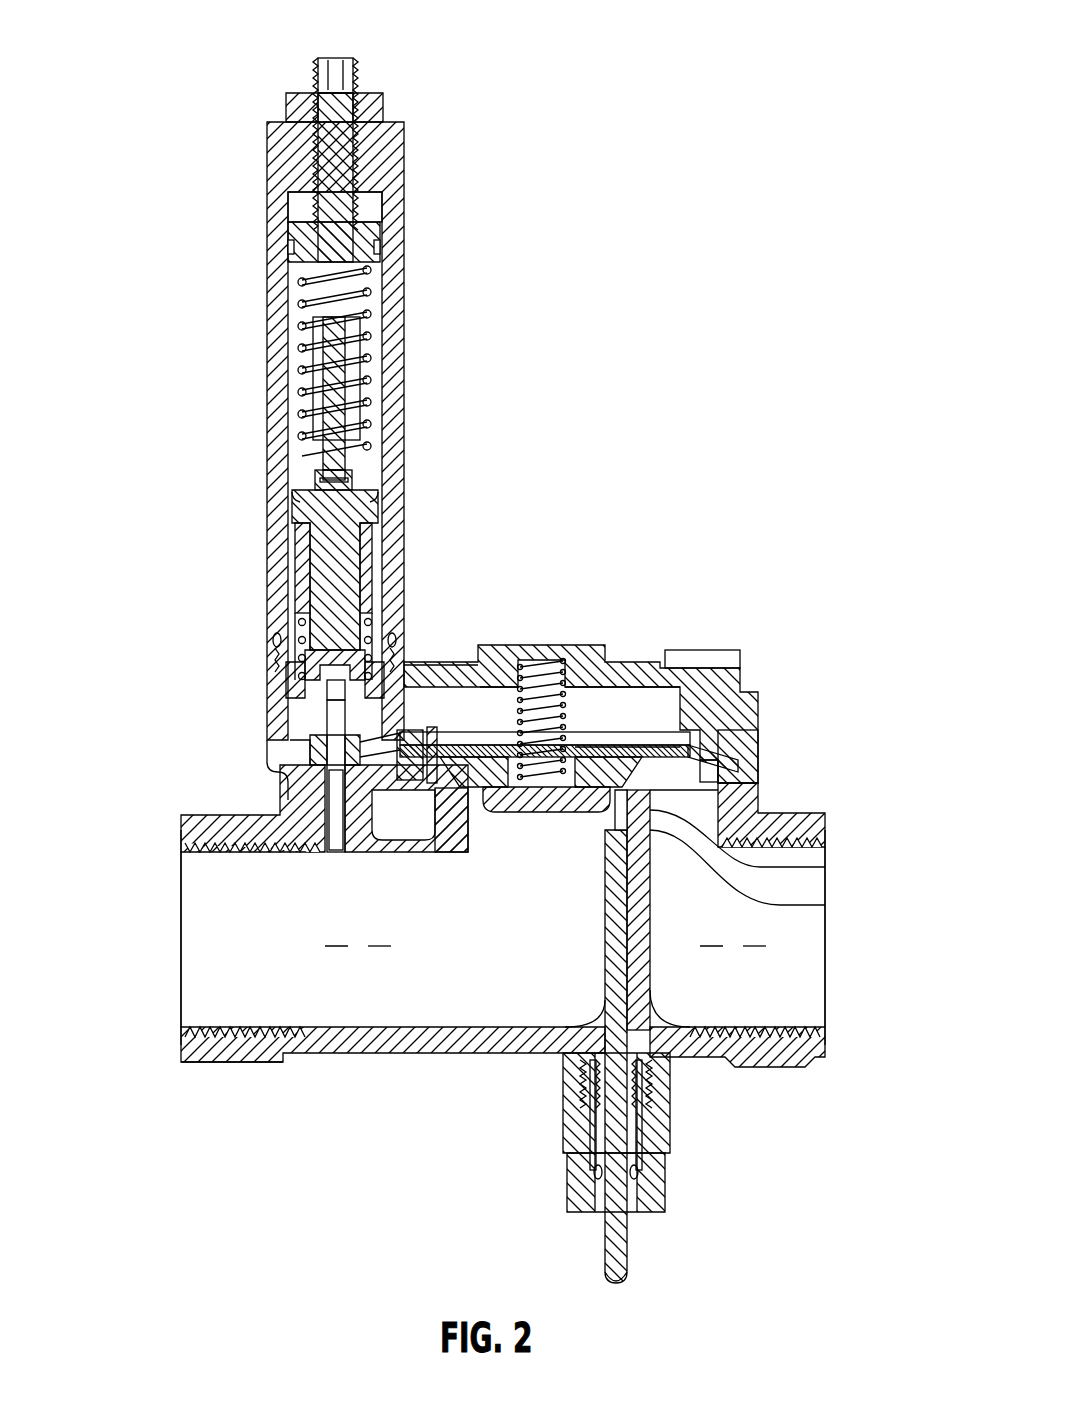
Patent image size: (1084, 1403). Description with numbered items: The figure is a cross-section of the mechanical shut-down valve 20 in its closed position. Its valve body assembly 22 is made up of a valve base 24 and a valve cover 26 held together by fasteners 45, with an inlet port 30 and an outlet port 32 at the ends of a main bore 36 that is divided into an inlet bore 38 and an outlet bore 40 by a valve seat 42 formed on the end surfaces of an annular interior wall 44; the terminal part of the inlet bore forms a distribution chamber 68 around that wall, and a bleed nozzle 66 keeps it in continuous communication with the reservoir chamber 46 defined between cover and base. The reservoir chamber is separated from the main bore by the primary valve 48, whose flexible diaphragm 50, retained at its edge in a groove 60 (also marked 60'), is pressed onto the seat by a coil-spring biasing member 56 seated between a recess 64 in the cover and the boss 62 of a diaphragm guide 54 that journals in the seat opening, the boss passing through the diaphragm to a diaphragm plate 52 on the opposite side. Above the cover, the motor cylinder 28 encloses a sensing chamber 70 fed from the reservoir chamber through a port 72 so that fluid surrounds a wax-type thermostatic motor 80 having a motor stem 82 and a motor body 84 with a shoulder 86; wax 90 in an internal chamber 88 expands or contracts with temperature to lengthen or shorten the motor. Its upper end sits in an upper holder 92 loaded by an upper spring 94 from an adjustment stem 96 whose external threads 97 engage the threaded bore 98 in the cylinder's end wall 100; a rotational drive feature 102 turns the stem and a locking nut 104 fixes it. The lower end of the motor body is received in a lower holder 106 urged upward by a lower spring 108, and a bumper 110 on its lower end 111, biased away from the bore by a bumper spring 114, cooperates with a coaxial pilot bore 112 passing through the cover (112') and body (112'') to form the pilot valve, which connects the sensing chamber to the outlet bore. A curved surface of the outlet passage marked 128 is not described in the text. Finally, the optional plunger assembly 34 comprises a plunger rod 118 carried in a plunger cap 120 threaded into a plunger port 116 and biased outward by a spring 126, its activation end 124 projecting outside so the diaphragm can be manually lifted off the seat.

The shut-down valve 20 is at (755, 205).
The valve body assembly 22 is at (199, 1080).
The valve base 24 is at (400, 1047).
The valve cover 26 is at (608, 650).
The motor cylinder 28 is at (292, 134).
The inlet port 30 is at (848, 932).
The outlet port 32 is at (158, 932).
The plunger assembly 34 is at (533, 1190).
The main bore 36 is at (530, 934).
The inlet bore 38 is at (754, 934).
The outlet bore 40 is at (379, 934).
The valve seat 42 is at (442, 756).
The annular interior wall 44 is at (458, 815).
The fasteners 45 is at (742, 668).
The reservoir chamber 46 is at (500, 700).
The primary valve 48 is at (712, 718).
The flexible diaphragm 50 is at (742, 777).
The diaphragm plate 52 is at (643, 768).
The diaphragm guide 54 is at (575, 800).
The biasing member 56 is at (542, 662).
The groove 60 is at (593, 691).
The diaphragm edge 60' is at (263, 770).
The boss 62 is at (630, 745).
The recess 64 is at (590, 682).
The bleed nozzle 66 is at (427, 740).
The distribution chamber 68 is at (412, 822).
The sensing chamber 70 is at (362, 480).
The port 72 is at (396, 662).
The thermostatic motor 80 is at (300, 466).
The motor stem 82 is at (338, 380).
The motor body 84 is at (322, 540).
The shoulder 86 is at (372, 520).
The chamber 88 is at (348, 472).
The wax 90 is at (352, 478).
The upper holder 92 is at (300, 330).
The upper spring 94 is at (358, 367).
The adjustment stem 96 is at (372, 224).
The external threads 97 is at (312, 173).
The bore 98 is at (357, 177).
The end wall 100 is at (270, 122).
The rotational drive feature 102 is at (326, 55).
The locking nut 104 is at (365, 100).
The lower holder 106 is at (302, 580).
The lower spring 108 is at (305, 622).
The bumper 110 is at (322, 670).
The lower end 111 is at (280, 639).
The pilot bore 112 is at (250, 776).
The pilot bore portion through valve cover 112' is at (207, 800).
The pilot bore portion through valve body 112'' is at (321, 810).
The bumper spring 114 is at (335, 700).
The plunger port 116 is at (662, 1090).
The plunger rod 118 is at (622, 1254).
The plunger cap 120 is at (662, 1170).
The activation end 124 is at (620, 1285).
The spring 126 is at (583, 1066).
The passage wall 128 is at (740, 905).